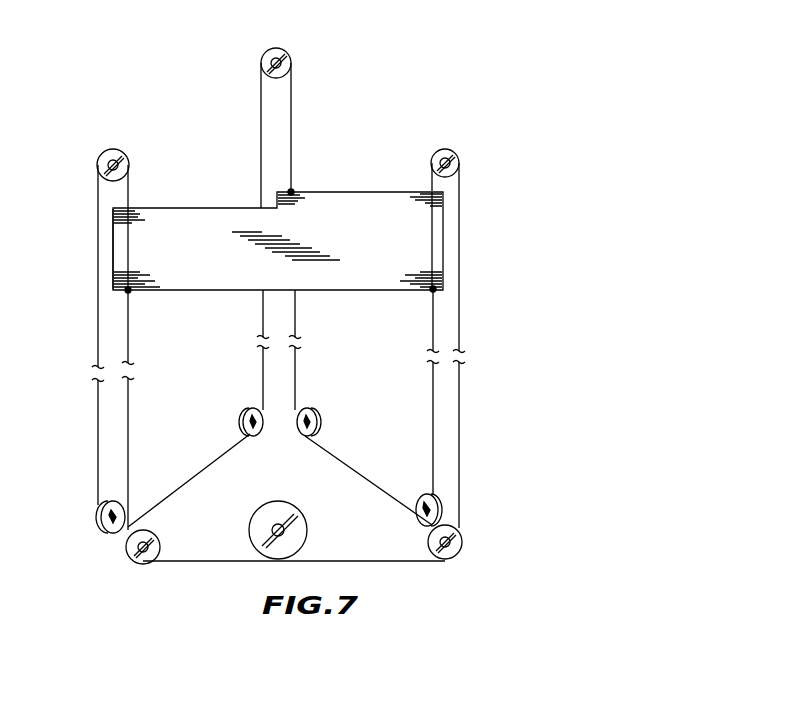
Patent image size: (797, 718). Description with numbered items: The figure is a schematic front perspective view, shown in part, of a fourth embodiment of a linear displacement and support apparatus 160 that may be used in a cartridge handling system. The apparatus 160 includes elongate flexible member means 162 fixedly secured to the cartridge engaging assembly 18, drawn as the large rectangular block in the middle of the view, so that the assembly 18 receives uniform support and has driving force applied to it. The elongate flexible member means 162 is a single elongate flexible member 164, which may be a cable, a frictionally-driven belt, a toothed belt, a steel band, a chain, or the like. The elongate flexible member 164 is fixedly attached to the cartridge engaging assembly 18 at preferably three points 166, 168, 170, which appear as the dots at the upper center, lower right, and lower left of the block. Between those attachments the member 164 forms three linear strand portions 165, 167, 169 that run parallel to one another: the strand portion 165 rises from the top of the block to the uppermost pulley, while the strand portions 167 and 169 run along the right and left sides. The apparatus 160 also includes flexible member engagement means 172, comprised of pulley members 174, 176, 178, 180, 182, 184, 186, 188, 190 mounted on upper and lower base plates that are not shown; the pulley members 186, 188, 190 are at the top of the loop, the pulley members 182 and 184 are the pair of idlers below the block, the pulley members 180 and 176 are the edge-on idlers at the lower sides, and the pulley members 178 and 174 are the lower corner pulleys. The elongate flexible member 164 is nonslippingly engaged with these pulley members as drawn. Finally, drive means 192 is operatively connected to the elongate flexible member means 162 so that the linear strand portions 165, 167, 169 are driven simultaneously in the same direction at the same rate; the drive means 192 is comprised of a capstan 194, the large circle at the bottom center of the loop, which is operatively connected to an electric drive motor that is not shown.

The linear displacement and support apparatus 160 is at (178, 105).
The cartridge engaging assembly 18 is at (197, 206).
The elongate flexible member means 162 is at (220, 565).
The elongate flexible member 164 is at (225, 460).
The linear strand portion 165 is at (291, 135).
The attachment point 166 is at (292, 190).
The linear strand portion 167 is at (430, 234).
The attachment point 168 is at (433, 290).
The linear strand portion 169 is at (128, 264).
The attachment point 170 is at (128, 290).
The flexible member engagement means 172 is at (118, 541).
The pulley member 174 is at (460, 536).
The pulley member 176 is at (422, 496).
The pulley member 178 is at (158, 545).
The pulley member 180 is at (100, 516).
The pulley member 182 is at (246, 410).
The pulley member 184 is at (314, 410).
The pulley member 186 is at (126, 158).
The pulley member 188 is at (288, 55).
The pulley member 190 is at (457, 156).
The drive means 192 is at (314, 541).
The capstan 194 is at (292, 508).